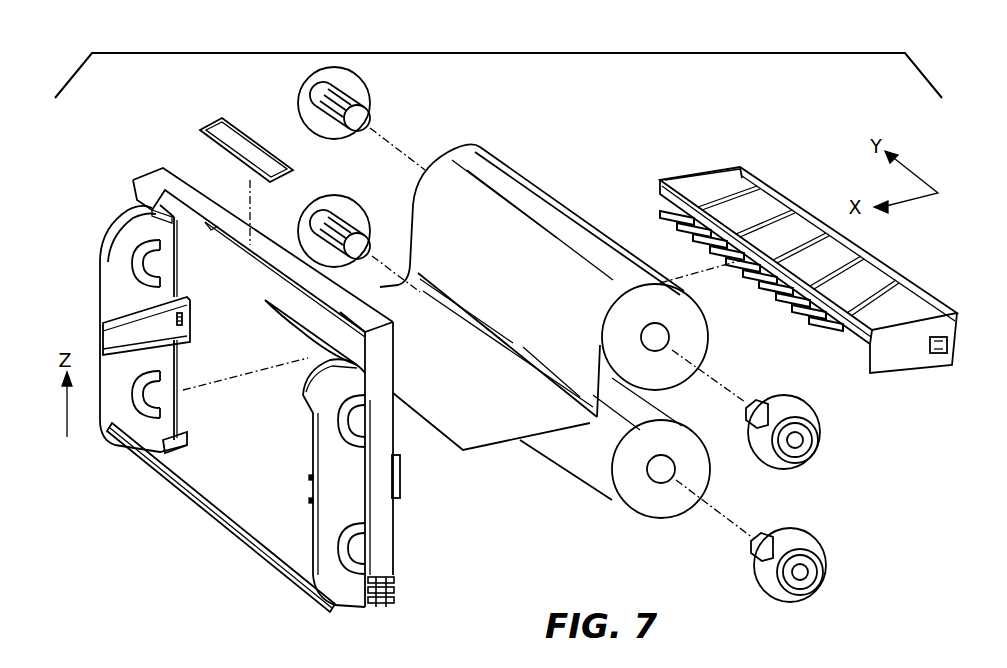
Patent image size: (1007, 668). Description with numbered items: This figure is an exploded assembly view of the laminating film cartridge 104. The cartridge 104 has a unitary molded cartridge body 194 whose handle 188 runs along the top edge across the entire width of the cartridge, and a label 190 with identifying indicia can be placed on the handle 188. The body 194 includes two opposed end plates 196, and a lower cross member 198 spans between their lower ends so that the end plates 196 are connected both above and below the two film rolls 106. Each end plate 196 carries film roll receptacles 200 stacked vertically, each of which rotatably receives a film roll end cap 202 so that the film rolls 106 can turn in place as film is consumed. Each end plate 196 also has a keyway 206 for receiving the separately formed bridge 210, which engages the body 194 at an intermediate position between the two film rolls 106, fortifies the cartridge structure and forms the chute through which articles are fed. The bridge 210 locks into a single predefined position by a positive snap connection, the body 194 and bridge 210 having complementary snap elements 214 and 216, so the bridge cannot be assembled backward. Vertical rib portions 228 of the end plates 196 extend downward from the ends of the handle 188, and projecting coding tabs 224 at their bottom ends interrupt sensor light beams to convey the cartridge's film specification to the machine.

The cartridge 104 is at (466, 53).
The film rolls 106 is at (633, 375).
The handle 188 is at (180, 183).
The label 190 is at (235, 124).
The cartridge body 194 is at (104, 210).
The end plates 196 is at (115, 278).
The lower cross member 198 is at (218, 520).
The film roll receptacles 200 is at (143, 257).
The film roll end cap 202 is at (357, 200).
The keyway 206 is at (123, 333).
The bridge 210 is at (723, 197).
The snap connection element of the body 214 is at (183, 318).
The snap connection element of the bridge 216 is at (937, 343).
The coding tabs 224 is at (393, 585).
The vertical rib portions 228 is at (383, 480).